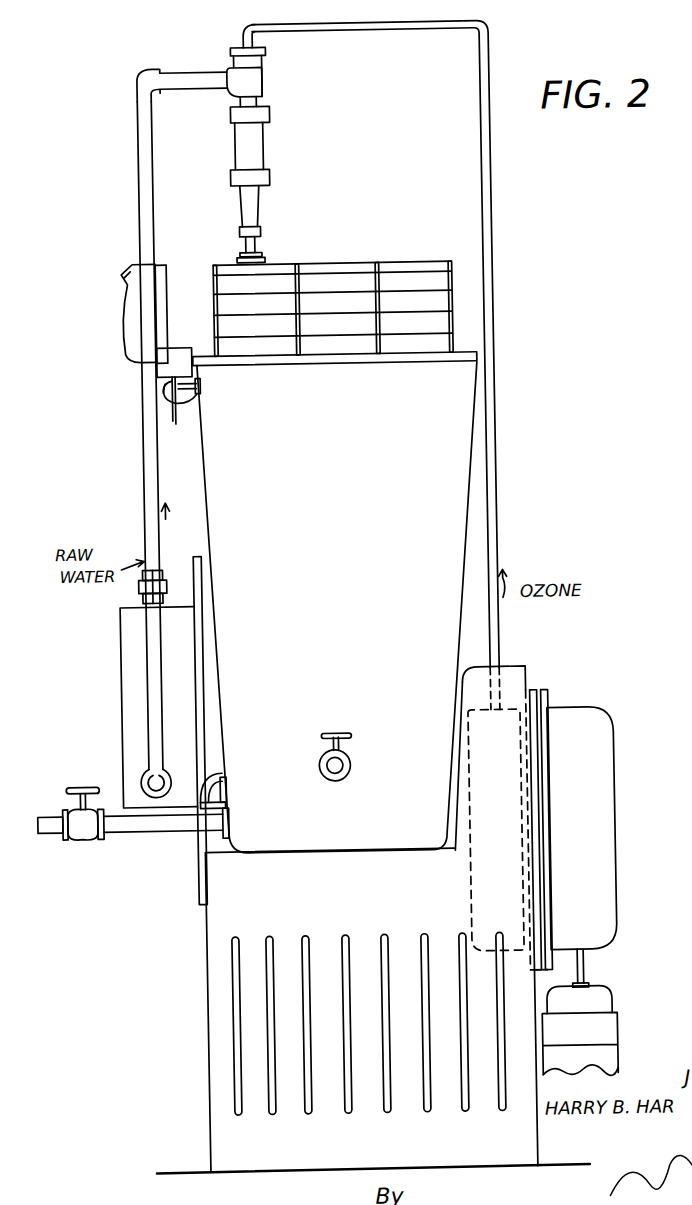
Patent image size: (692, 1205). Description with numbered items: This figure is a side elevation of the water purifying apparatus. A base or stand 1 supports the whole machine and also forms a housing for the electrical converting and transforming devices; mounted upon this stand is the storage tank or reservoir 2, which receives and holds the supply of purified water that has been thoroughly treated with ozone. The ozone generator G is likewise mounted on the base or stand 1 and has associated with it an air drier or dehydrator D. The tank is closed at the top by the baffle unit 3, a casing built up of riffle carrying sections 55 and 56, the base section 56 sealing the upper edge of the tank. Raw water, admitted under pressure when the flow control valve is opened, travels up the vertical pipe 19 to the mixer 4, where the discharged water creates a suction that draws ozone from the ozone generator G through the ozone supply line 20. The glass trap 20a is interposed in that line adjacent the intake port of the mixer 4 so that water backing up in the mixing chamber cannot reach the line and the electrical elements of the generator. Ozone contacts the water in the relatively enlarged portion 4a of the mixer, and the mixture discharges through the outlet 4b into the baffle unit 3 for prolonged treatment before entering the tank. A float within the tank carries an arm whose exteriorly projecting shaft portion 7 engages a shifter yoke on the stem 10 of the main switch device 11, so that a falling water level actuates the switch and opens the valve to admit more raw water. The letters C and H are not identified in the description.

The base or stand 1 is at (371, 1010).
The storage tank or reservoir 2 is at (341, 607).
The baffle unit 3 is at (333, 301).
The mixer 4 is at (260, 149).
The relatively enlarged portion 4a is at (243, 139).
The outlet 4b is at (263, 245).
The shaft portion 7 is at (190, 392).
The stem 10 is at (178, 410).
The main switch device 11 is at (174, 359).
The vertical pipe 19 is at (146, 148).
The ozone supply line 20 is at (492, 453).
The glass trap 20a is at (272, 76).
The riffle carrying section 55 is at (345, 320).
The base section 56 is at (269, 348).
The chamber C is at (120, 688).
The air drier or dehydrator D is at (605, 1034).
The ozone generator G is at (582, 846).
The switch housing H is at (128, 322).